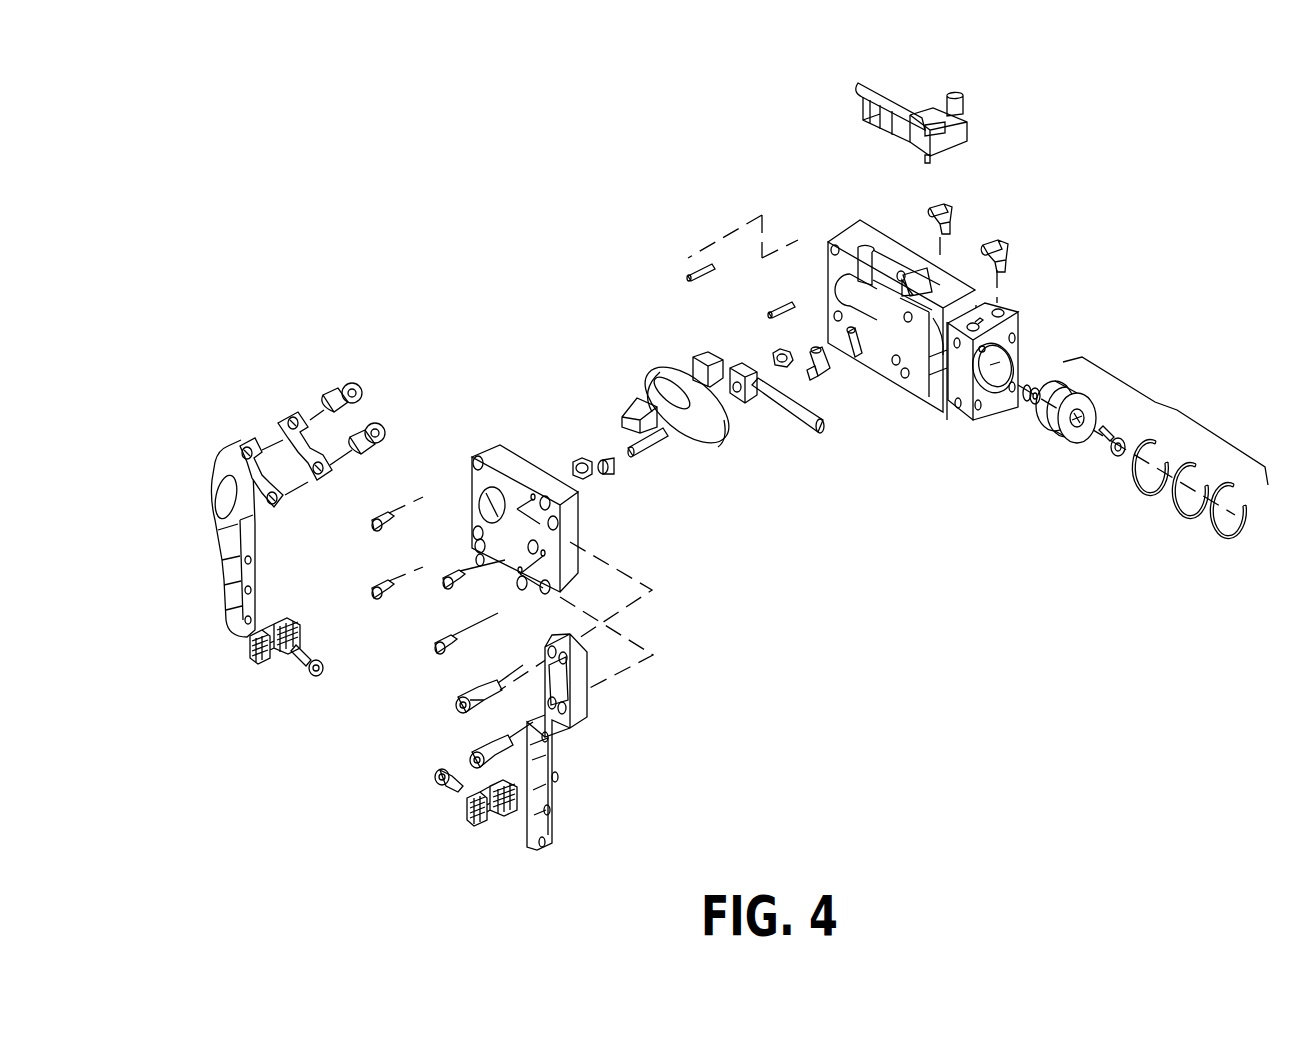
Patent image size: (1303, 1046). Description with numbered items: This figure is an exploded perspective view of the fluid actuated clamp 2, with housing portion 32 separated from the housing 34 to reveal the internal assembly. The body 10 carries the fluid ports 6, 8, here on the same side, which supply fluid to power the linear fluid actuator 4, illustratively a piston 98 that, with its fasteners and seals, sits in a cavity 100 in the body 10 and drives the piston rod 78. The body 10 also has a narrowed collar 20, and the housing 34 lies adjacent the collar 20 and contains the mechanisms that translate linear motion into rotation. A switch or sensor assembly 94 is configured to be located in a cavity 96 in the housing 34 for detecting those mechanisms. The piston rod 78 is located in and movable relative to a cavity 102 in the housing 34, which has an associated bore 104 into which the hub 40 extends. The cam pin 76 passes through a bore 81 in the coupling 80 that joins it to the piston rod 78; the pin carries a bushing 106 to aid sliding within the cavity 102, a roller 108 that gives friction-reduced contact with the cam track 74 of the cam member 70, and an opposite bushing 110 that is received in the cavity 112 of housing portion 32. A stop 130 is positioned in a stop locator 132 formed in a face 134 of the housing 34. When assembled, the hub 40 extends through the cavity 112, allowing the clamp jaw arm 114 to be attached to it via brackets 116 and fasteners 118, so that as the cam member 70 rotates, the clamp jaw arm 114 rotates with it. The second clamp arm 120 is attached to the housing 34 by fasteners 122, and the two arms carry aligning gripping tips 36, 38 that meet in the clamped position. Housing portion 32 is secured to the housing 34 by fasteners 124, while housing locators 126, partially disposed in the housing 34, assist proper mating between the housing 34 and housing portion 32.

The fluid actuated clamp 2 is at (1063, 182).
The linear fluid actuator 4 is at (1165, 448).
The fluid port 6 is at (1020, 246).
The fluid port 8 is at (958, 200).
The body 10 is at (1005, 452).
The collar 20 is at (955, 434).
The housing portion 32 is at (501, 448).
The housing 34 is at (876, 200).
The tip 36 is at (470, 848).
The tip 38 is at (258, 703).
The hub 40 is at (705, 352).
The cam member 70 is at (649, 373).
The cam track 74 is at (735, 480).
The cam pin 76 is at (665, 467).
The piston rod 78 is at (810, 452).
The coupling 80 is at (745, 364).
The bore 81 is at (745, 425).
The switch or sensor assembly 94 is at (1013, 92).
The cavity 96 is at (893, 254).
The piston 98 is at (1098, 340).
The cavity 100 is at (1040, 306).
The cavity 102 is at (905, 420).
The bore 104 is at (838, 284).
The bushing 106 is at (800, 328).
The roller 108 is at (612, 493).
The bushing 110 is at (578, 464).
The cavity 112 is at (494, 505).
The clamp jaw arm 114 is at (218, 434).
The brackets 116 is at (300, 414).
The fasteners 118 is at (378, 424).
The second clamp arm 120 is at (645, 710).
The fasteners 122 is at (470, 754).
The fasteners 124 is at (433, 647).
The housing locators 126 is at (770, 306).
The stop 130 is at (830, 395).
The stop locator 132 is at (860, 387).
The face 134 is at (870, 440).